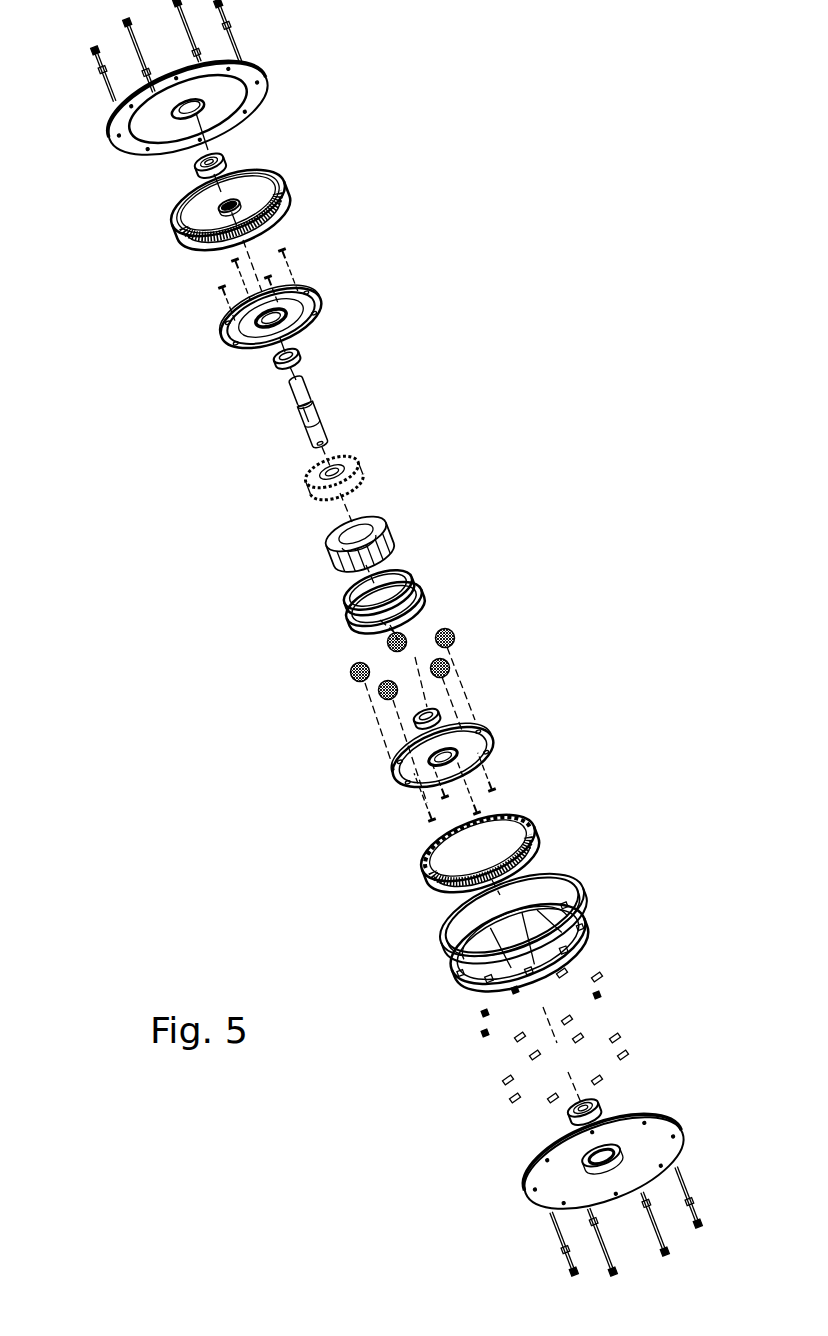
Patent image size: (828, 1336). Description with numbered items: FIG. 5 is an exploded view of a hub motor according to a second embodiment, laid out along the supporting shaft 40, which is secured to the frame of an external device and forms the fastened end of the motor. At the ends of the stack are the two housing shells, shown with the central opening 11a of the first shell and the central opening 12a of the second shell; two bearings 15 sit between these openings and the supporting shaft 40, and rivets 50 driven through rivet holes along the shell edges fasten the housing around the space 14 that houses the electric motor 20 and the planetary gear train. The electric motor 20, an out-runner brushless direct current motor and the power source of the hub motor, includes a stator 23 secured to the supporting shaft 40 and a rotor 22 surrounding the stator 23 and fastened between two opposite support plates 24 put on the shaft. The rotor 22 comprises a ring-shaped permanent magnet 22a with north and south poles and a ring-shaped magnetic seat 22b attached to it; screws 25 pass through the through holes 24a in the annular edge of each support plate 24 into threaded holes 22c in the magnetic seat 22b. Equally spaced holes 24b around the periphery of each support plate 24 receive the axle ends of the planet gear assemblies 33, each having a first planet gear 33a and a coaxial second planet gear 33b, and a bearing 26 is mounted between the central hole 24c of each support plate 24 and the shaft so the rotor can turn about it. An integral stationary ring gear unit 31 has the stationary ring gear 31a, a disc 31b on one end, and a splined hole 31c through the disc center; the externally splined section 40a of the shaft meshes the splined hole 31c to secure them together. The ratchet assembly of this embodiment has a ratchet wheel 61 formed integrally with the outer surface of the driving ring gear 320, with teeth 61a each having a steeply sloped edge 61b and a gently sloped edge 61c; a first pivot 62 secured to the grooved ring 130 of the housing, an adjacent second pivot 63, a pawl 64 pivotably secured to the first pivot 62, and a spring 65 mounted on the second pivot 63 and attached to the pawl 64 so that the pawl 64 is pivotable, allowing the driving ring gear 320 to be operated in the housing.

The rivets 50 is at (92, 52).
The central opening 11a is at (226, 136).
The bearings 15 is at (196, 164).
The stationary ring gear unit 31 is at (267, 209).
The stationary ring gear 31a is at (270, 178).
The disc 31b is at (272, 230).
The splined hole 31c is at (220, 220).
The screws 25 is at (218, 292).
The support plates 24 is at (352, 545).
The through holes 24a is at (297, 338).
The holes 24b is at (258, 340).
The central hole 24c is at (283, 322).
The bearings 26 is at (297, 353).
The supporting shaft 40 is at (364, 386).
The externally splined section 40a is at (305, 382).
The electric motor 20 is at (317, 555).
The stator 23 is at (308, 475).
The rotor 22 is at (304, 588).
The permanent magnet 22a is at (330, 552).
The magnetic seat 22b is at (345, 605).
The threaded holes 22c is at (338, 618).
The planet gear assemblies 33 is at (490, 681).
The first planet gear 33a is at (452, 628).
The second planet gear 33b is at (453, 637).
The ratchet wheel 61 is at (492, 846).
The driving ring gear 320 is at (530, 830).
The teeth 61a is at (440, 833).
The steeply sloped edge 61b is at (535, 845).
The gently sloped edge 61c is at (427, 863).
The grooved ring 130 is at (530, 949).
The second pivot 63 is at (565, 930).
The first pivot 62 is at (488, 955).
The space 14 is at (455, 960).
The pawl 64 is at (515, 1098).
The spring 65 is at (485, 1013).
The central opening 12a is at (622, 1176).